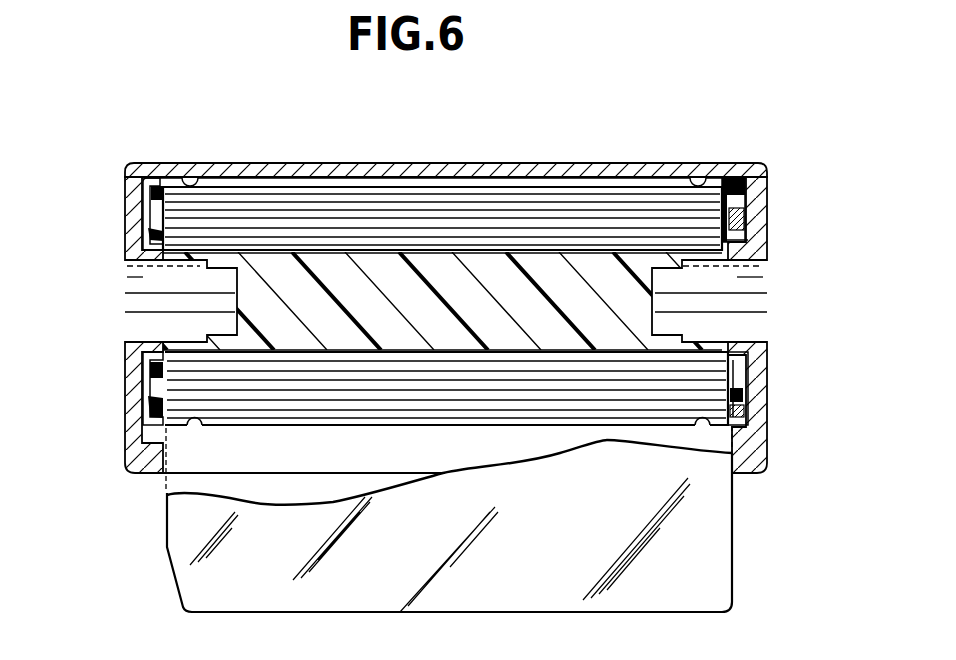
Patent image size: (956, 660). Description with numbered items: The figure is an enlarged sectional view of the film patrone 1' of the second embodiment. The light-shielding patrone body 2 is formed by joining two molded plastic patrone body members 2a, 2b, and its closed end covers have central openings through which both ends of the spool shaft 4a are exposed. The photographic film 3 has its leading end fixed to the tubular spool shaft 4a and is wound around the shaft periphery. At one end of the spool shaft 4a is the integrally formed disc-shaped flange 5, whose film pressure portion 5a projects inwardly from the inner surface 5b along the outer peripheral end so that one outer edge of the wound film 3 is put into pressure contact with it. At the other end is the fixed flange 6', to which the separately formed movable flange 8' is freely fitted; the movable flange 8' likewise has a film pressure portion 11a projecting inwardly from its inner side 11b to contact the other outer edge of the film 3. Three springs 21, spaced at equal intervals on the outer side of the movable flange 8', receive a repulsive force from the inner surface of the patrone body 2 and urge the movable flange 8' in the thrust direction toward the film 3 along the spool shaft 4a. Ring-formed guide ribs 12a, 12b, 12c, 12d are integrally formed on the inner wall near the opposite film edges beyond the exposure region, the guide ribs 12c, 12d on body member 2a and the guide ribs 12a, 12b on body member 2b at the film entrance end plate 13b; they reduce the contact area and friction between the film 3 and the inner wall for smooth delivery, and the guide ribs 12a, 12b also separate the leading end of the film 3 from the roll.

The film patrone of the second embodiment 1' is at (403, 108).
The patrone body 2 is at (406, 287).
The patrone body member 2a is at (127, 236).
The patrone body member 2b is at (128, 421).
The photographic film 3 is at (372, 178).
The spool shaft 4a is at (463, 262).
The flange 5 is at (147, 375).
The film pressure portion 5a is at (168, 185).
The inner surface 5b is at (158, 207).
The fixed flange 6' is at (784, 388).
The movable flange 8' is at (757, 172).
The film pressure portion 11a is at (719, 186).
The inner side 11b is at (722, 205).
The guide rib 12a is at (195, 424).
The guide rib 12b is at (703, 426).
The guide rib 12c is at (192, 180).
The guide rib 12d is at (700, 178).
The film entrance end plate 13b is at (260, 453).
The spring 21 is at (742, 222).